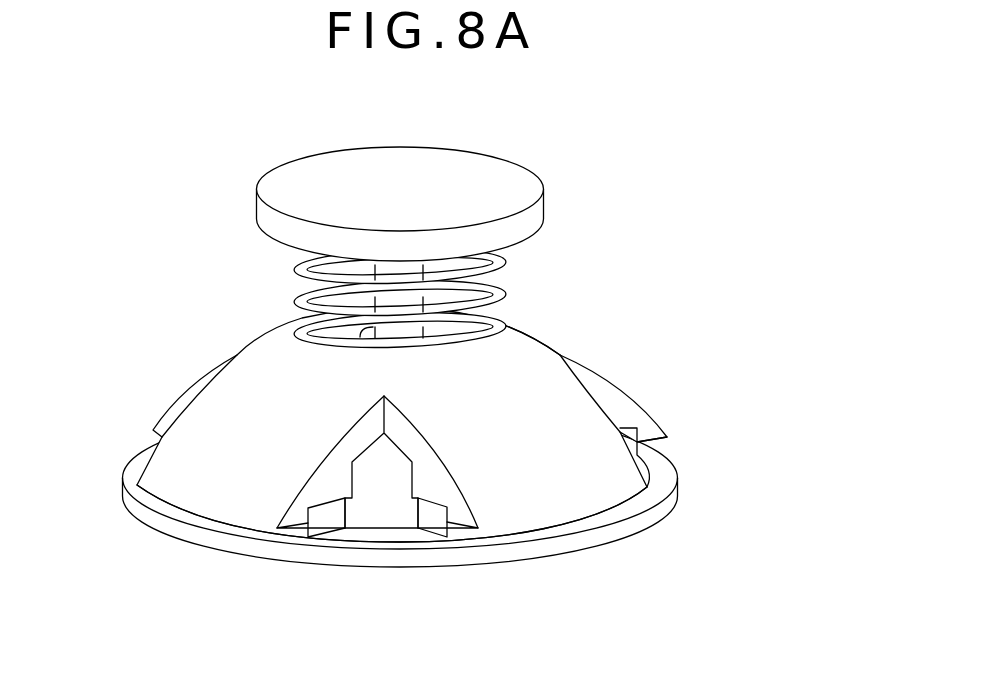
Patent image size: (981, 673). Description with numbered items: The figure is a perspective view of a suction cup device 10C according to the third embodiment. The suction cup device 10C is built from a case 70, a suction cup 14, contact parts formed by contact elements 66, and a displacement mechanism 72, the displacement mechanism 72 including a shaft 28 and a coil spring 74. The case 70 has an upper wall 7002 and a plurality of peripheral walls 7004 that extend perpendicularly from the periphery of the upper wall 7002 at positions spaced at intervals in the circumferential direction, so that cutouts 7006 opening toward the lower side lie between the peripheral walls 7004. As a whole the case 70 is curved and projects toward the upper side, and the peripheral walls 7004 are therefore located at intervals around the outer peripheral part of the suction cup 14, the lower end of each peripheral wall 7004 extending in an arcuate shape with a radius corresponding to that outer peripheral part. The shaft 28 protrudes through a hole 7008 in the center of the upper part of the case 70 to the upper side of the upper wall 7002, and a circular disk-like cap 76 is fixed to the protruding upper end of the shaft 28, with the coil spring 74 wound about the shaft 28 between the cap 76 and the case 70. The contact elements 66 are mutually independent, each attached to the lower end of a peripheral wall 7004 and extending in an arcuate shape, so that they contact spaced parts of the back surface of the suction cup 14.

The suction cup device 10C is at (602, 152).
The suction cup 14 is at (540, 553).
The shaft 28 is at (405, 303).
The contact elements 66 is at (325, 525).
The case 70 is at (230, 380).
The displacement mechanism 72 is at (583, 333).
The coil spring 74 is at (402, 271).
The cap 76 is at (438, 160).
The upper wall 7002 is at (293, 338).
The peripheral walls 7004 is at (187, 455).
The cutouts 7006 is at (613, 398).
The hole 7008 is at (483, 313).